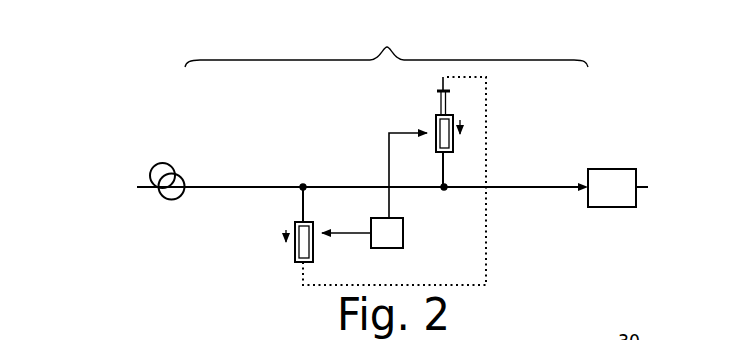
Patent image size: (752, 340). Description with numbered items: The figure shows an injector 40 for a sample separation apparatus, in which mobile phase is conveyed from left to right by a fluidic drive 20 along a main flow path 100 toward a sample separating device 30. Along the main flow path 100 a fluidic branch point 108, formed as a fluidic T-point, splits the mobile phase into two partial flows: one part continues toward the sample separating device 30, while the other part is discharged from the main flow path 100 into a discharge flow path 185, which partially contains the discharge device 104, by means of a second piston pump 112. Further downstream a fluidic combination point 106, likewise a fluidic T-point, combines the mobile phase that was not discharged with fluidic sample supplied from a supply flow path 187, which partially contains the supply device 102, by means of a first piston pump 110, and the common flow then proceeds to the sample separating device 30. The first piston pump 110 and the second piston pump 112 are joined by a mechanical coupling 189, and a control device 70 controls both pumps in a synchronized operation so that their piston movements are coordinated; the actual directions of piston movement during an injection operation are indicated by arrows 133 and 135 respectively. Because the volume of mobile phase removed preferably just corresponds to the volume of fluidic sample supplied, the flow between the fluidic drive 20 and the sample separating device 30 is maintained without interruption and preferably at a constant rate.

The fluidic drive 20 is at (163, 162).
The sample separating device 30 is at (612, 169).
The injector 40 is at (298, 138).
The control device 70 is at (387, 233).
The main flow path 100 is at (386, 42).
The supply device 102 is at (436, 153).
The discharge device 104 is at (378, 218).
The fluidic combination point 106 is at (444, 191).
The fluidic branch point 108 is at (299, 189).
The first piston pump 110 is at (437, 127).
The second piston pump 112 is at (295, 262).
The arrow 133 is at (284, 237).
The arrow 135 is at (463, 129).
The discharge flow path 185 is at (296, 207).
The supply flow path 187 is at (448, 158).
The mechanical coupling 189 is at (487, 238).